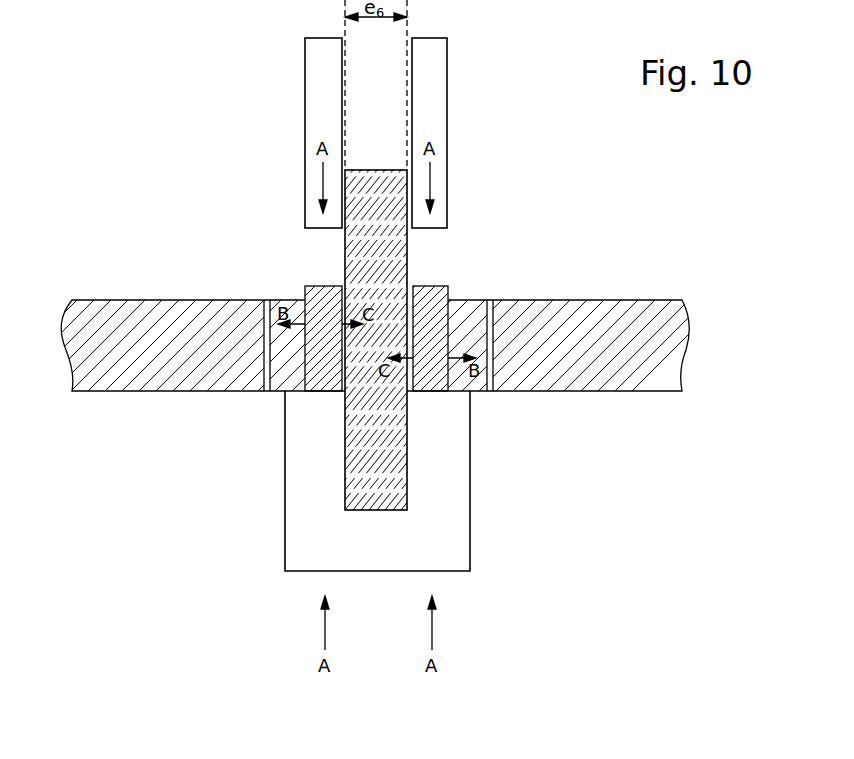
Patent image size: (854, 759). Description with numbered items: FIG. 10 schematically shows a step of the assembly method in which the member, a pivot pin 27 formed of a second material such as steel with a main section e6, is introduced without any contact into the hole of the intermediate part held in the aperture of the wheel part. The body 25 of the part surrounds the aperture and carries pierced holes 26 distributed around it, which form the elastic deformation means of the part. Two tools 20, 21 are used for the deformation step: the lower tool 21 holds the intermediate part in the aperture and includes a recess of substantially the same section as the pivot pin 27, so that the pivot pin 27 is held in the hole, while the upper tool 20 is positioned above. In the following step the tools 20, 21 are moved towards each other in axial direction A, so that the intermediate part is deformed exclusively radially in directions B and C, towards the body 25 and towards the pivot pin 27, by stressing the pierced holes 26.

The tool 20 is at (437, 93).
The tool 21 is at (457, 508).
The body 25 is at (640, 322).
The pierced holes 26 is at (265, 290).
The pivot pin 27 is at (397, 265).